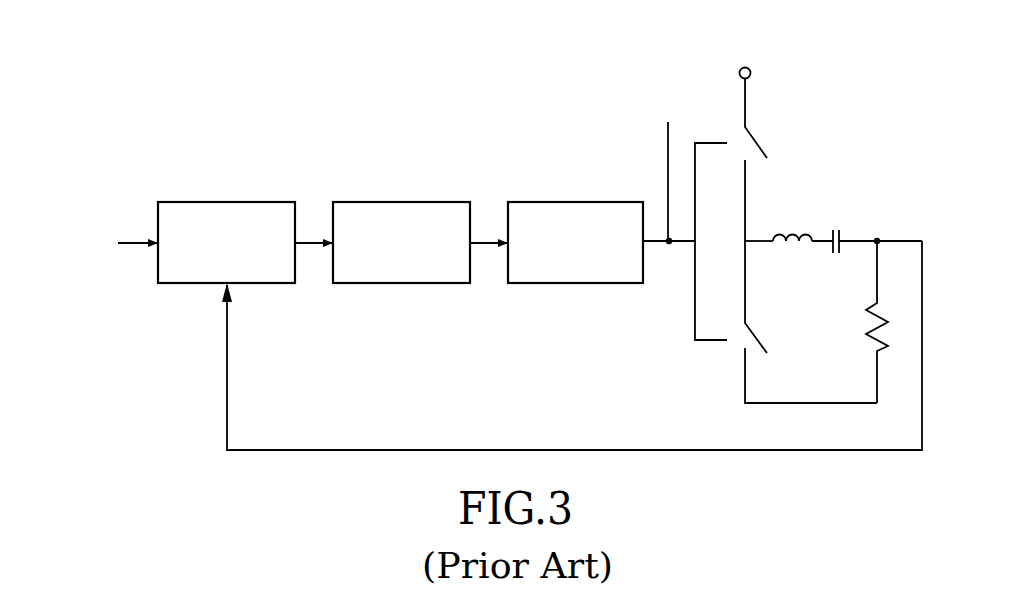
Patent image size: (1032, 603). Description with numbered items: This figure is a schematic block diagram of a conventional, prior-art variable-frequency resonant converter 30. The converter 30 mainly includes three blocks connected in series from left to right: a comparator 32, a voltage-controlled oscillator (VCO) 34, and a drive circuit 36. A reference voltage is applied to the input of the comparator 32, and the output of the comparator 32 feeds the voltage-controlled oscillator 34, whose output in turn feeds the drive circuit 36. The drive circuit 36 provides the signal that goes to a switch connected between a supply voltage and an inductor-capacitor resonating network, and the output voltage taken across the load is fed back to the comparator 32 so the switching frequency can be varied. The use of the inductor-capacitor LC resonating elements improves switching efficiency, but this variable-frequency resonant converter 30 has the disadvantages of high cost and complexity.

The variable-frequency resonant converter 30 is at (411, 112).
The comparator 32 is at (234, 202).
The voltage-controlled oscillator (VCO) 34 is at (408, 202).
The drive circuit 36 is at (584, 202).